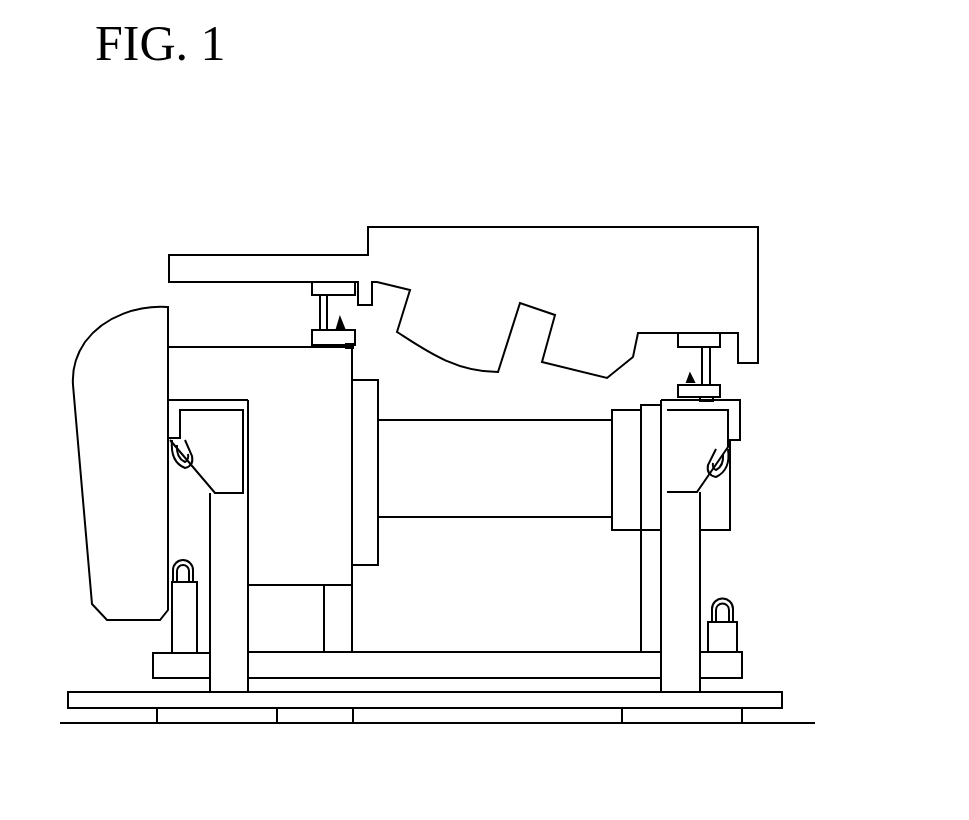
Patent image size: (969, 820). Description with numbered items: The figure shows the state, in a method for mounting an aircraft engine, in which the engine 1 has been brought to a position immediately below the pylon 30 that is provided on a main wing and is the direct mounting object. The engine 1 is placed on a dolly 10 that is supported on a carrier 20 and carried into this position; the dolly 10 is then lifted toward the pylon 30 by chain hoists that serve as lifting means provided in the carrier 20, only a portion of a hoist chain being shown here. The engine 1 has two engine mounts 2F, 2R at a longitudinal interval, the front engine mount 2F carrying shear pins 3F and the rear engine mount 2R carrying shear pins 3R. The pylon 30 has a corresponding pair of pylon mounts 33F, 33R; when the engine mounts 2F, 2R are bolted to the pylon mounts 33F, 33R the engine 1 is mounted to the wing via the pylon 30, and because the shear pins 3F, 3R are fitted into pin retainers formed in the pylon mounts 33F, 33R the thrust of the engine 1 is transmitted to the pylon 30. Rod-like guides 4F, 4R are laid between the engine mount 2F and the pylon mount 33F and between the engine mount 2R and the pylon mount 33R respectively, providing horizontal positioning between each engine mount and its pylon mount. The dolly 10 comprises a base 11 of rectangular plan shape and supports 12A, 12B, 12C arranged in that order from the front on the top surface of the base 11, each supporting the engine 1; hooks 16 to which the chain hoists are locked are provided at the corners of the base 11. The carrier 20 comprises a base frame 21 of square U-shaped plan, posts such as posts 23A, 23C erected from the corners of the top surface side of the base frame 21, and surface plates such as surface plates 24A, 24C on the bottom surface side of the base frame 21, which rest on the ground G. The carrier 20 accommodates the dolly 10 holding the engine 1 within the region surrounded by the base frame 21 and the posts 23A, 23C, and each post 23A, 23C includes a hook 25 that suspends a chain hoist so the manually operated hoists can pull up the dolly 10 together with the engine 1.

The aircraft engine 1 is at (98, 330).
The pylon 30 is at (592, 227).
The pylon mount 33F is at (313, 288).
The rod-like guide 4F is at (328, 305).
The engine mount 2F is at (313, 336).
The shear pin 3F is at (355, 332).
The pylon mount 33R is at (735, 334).
The rod-like guide 4R is at (712, 367).
The engine mount 2R is at (722, 391).
The shear pin 3R is at (686, 376).
The hook 25 is at (167, 457).
The post 23A is at (208, 522).
The post 23C is at (703, 572).
The hook 16 is at (183, 551).
The support 12A is at (167, 630).
The support 12B is at (353, 623).
The support 12C is at (642, 608).
The base 11 is at (497, 652).
The dolly 10 is at (500, 680).
The carrier 20 is at (417, 710).
The base frame 21 is at (352, 722).
The surface plate 24A is at (213, 723).
The surface plate 24C is at (680, 723).
The ground G is at (803, 722).